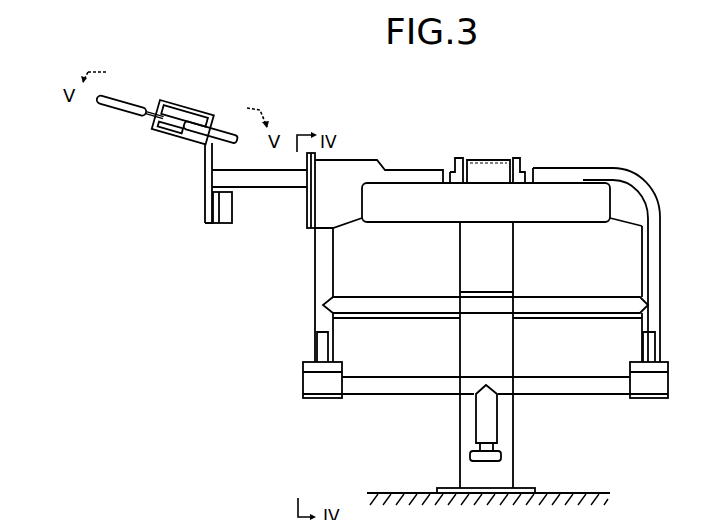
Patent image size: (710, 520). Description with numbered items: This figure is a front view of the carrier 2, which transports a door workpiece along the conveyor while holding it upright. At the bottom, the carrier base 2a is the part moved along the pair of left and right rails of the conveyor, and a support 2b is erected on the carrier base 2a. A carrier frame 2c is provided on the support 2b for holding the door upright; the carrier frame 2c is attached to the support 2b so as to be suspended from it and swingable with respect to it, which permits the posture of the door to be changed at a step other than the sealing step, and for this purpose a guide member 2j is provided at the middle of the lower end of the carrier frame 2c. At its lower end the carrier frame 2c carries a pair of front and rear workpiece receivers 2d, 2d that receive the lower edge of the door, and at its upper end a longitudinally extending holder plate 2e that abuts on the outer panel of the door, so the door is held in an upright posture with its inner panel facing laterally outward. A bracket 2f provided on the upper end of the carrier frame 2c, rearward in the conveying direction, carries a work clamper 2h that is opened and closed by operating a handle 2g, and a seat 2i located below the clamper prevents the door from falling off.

The carrier 2 is at (640, 176).
The carrier base 2a is at (575, 492).
The support 2b is at (507, 267).
The carrier frame 2c is at (653, 267).
The workpiece receivers 2d is at (318, 386).
The holder plate 2e is at (589, 215).
The bracket 2f is at (198, 112).
The handle 2g is at (128, 104).
The work clamper 2h is at (233, 130).
The seat 2i is at (222, 218).
The guide member 2j is at (482, 420).